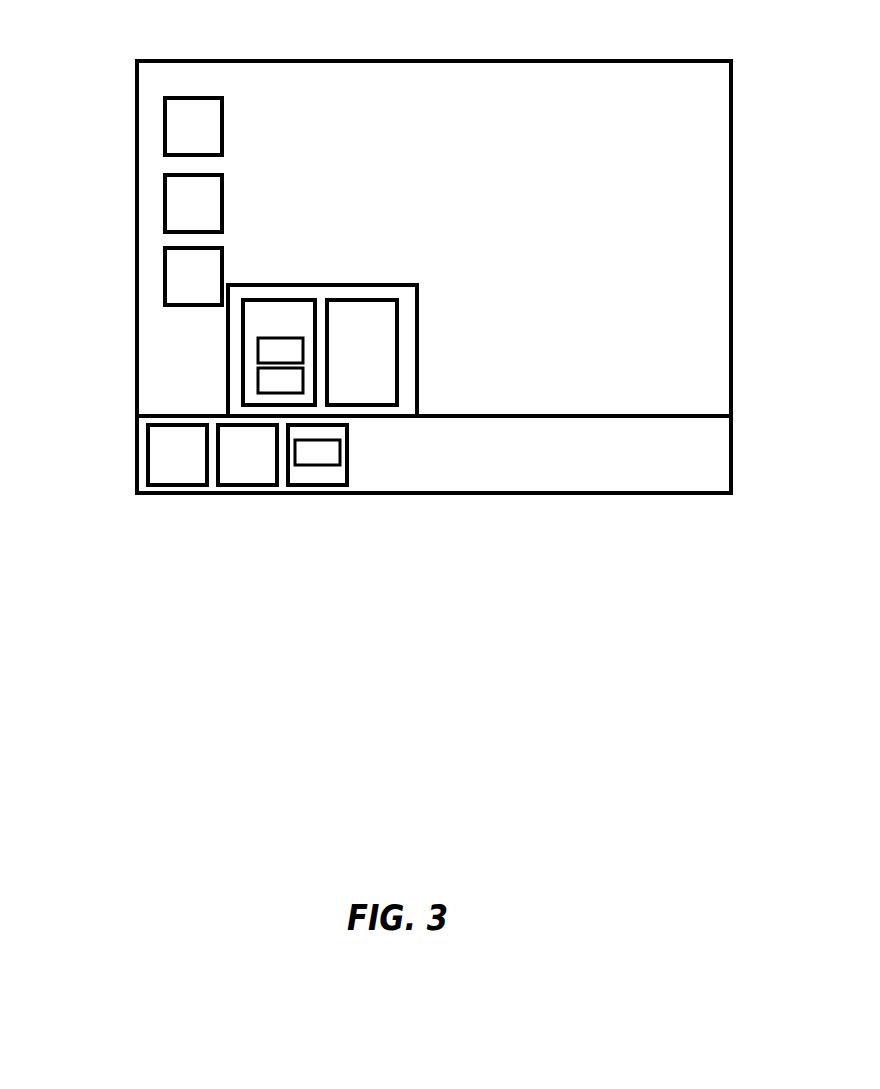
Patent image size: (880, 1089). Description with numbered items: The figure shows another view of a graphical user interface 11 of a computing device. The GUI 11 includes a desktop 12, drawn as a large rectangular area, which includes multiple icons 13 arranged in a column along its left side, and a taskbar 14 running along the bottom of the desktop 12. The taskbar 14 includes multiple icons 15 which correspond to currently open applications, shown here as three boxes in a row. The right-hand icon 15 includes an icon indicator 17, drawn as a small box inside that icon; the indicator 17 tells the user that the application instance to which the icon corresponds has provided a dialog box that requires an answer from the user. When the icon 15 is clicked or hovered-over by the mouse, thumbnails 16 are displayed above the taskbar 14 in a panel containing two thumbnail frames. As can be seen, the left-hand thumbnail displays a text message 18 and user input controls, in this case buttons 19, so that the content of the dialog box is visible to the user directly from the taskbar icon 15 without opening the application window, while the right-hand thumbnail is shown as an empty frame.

The graphical user interface 11 is at (674, 594).
The desktop 12 is at (618, 98).
The icons 13 is at (193, 278).
The taskbar 14 is at (618, 455).
The icons 15 is at (177, 455).
The thumbnails 16 is at (253, 307).
The icon indicator 17 is at (323, 458).
The text message 18 is at (262, 322).
The buttons 19 is at (260, 350).